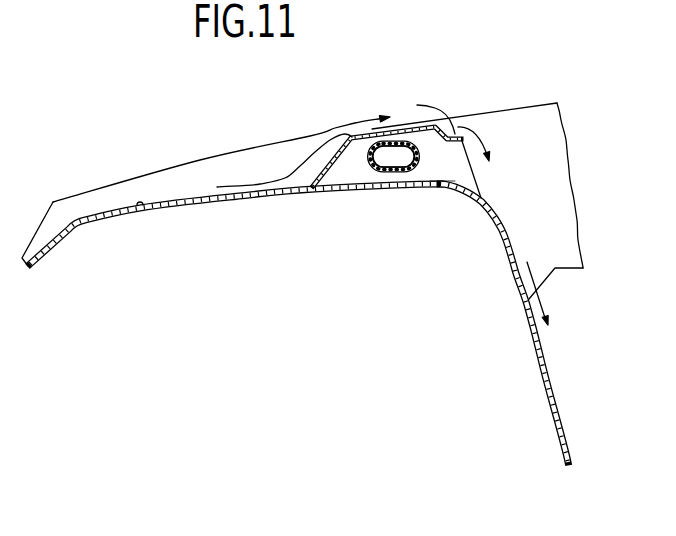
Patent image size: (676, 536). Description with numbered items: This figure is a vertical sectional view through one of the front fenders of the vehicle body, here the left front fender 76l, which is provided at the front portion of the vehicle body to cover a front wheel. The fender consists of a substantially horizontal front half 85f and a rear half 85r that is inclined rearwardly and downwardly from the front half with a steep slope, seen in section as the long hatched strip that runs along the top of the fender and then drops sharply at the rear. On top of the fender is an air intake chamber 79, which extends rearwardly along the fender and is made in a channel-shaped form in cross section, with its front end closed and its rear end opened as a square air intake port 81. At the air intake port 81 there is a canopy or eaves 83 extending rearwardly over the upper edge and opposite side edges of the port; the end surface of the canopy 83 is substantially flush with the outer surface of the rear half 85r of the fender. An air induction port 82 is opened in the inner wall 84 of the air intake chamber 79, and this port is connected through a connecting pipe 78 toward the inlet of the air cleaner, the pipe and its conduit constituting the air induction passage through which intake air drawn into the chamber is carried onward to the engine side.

The left front fender 76l is at (206, 191).
The air intake chamber 79 is at (395, 127).
The canopy 83 is at (451, 138).
The connecting pipe 78 is at (377, 172).
The air induction port 82 is at (399, 166).
The inner wall 84 is at (442, 181).
The air intake port 81 is at (463, 177).
The front half 85f is at (141, 208).
The rear half 85r is at (551, 373).